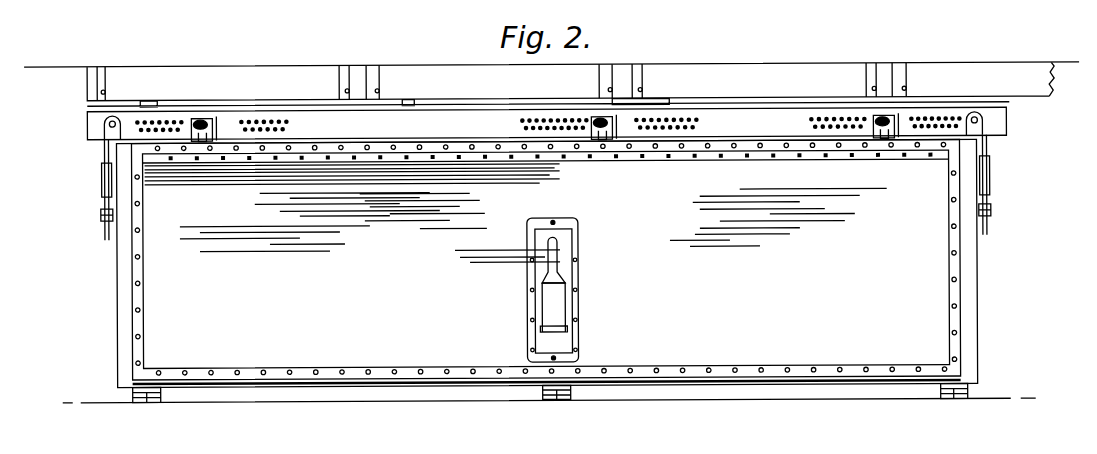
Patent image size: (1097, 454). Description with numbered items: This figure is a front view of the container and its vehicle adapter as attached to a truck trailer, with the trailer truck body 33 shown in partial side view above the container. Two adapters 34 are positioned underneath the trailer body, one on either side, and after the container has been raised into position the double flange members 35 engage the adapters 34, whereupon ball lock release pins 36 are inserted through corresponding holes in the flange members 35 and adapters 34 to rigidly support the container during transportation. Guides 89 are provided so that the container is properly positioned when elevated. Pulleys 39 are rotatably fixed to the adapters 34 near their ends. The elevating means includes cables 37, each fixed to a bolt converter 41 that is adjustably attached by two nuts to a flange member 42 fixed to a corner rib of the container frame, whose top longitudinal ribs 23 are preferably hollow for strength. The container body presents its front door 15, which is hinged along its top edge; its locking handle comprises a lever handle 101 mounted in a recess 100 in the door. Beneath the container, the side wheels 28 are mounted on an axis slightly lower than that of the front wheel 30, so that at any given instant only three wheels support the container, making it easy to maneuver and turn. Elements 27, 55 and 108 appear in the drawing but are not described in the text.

The front door 15 is at (382, 299).
The top longitudinal ribs 23 is at (348, 146).
The outer frame 27 is at (127, 313).
The side wheels 28 is at (138, 400).
The front wheel 30 is at (552, 398).
The trailer truck body 33 is at (272, 72).
The adapters 34 is at (1005, 132).
The double flange members 35 is at (205, 139).
The ball lock release pins 36 is at (207, 118).
The cables 37 is at (105, 153).
The pulleys 39 is at (105, 126).
The bolt converter 41 is at (102, 204).
The flange member 42 is at (110, 242).
The floor line 55 is at (273, 453).
The guides 89 is at (218, 126).
The recess 100 is at (562, 237).
The lever handle 101 is at (556, 317).
The indicator tube 108 is at (560, 278).